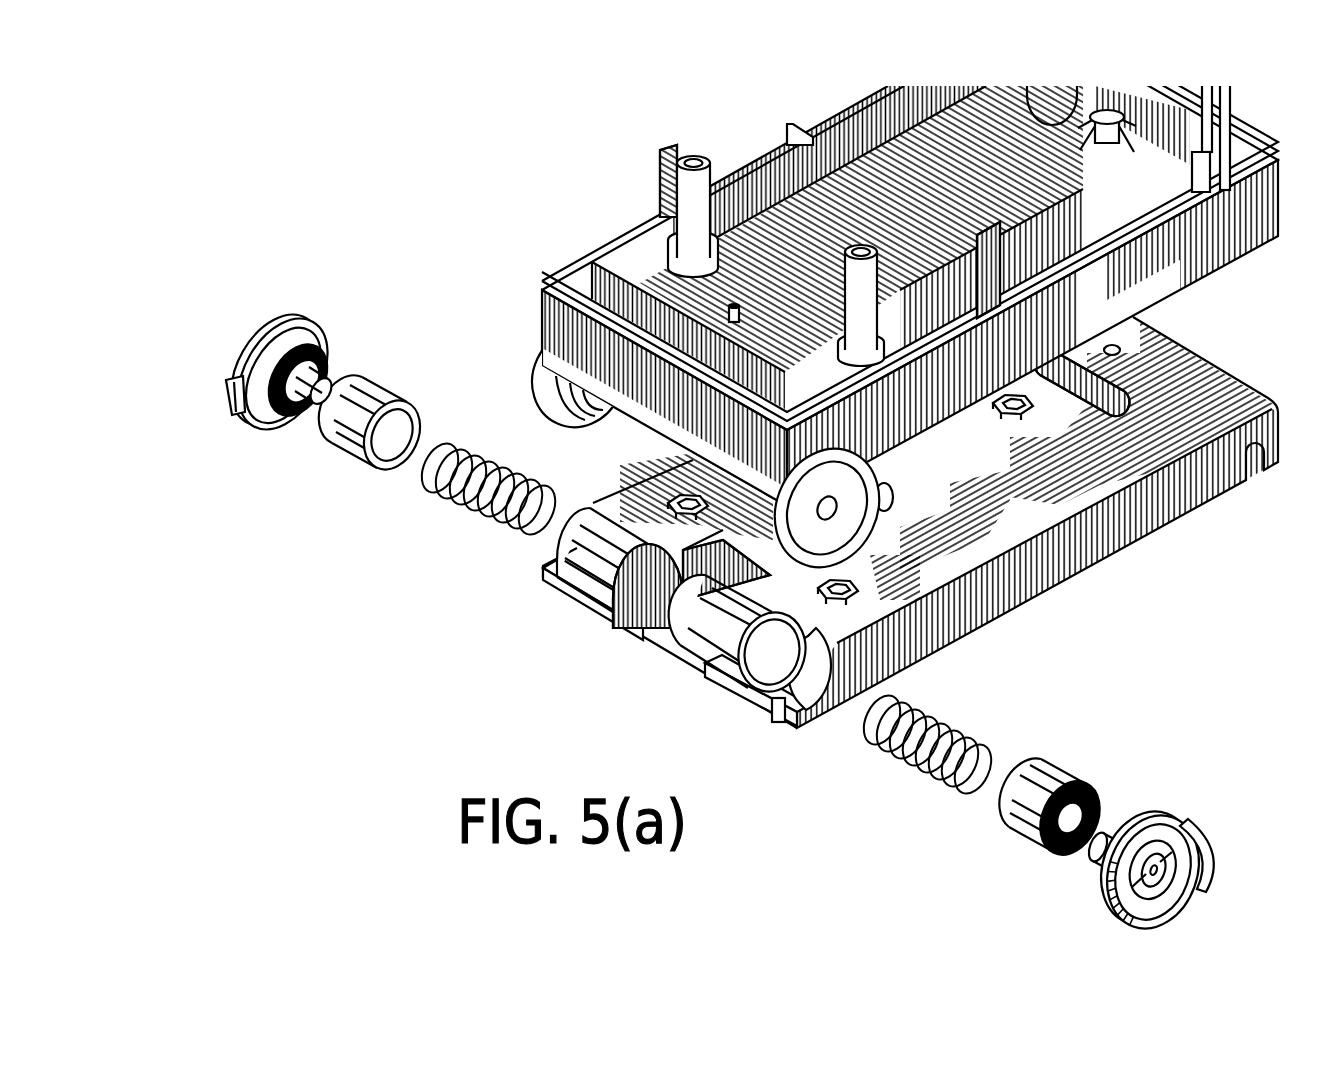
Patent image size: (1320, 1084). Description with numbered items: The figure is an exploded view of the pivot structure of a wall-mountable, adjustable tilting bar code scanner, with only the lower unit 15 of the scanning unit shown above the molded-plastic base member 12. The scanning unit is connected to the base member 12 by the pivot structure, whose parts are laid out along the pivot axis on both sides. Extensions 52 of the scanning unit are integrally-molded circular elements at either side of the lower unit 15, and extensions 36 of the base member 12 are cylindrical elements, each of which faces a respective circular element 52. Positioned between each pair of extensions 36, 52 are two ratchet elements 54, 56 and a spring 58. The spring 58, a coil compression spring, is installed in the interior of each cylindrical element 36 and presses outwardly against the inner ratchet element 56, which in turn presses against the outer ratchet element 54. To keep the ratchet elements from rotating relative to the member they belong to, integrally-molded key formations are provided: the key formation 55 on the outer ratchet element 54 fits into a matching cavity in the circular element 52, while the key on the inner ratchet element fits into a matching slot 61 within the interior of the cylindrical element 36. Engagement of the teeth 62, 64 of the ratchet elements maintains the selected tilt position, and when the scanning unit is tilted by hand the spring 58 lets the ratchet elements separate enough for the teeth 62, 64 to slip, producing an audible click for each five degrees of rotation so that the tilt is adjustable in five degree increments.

The base member 12 is at (1000, 607).
The lower portion 15 is at (933, 417).
The cylindrical element 36 is at (585, 600).
The circular element 52 is at (527, 385).
The outer ratchet element 54 is at (312, 330).
The key formation 55 is at (230, 402).
The inner ratchet element 56 is at (352, 452).
The spring 58 is at (530, 490).
The slot 61 is at (787, 632).
The teeth 62 is at (1094, 830).
The teeth 64 is at (297, 422).